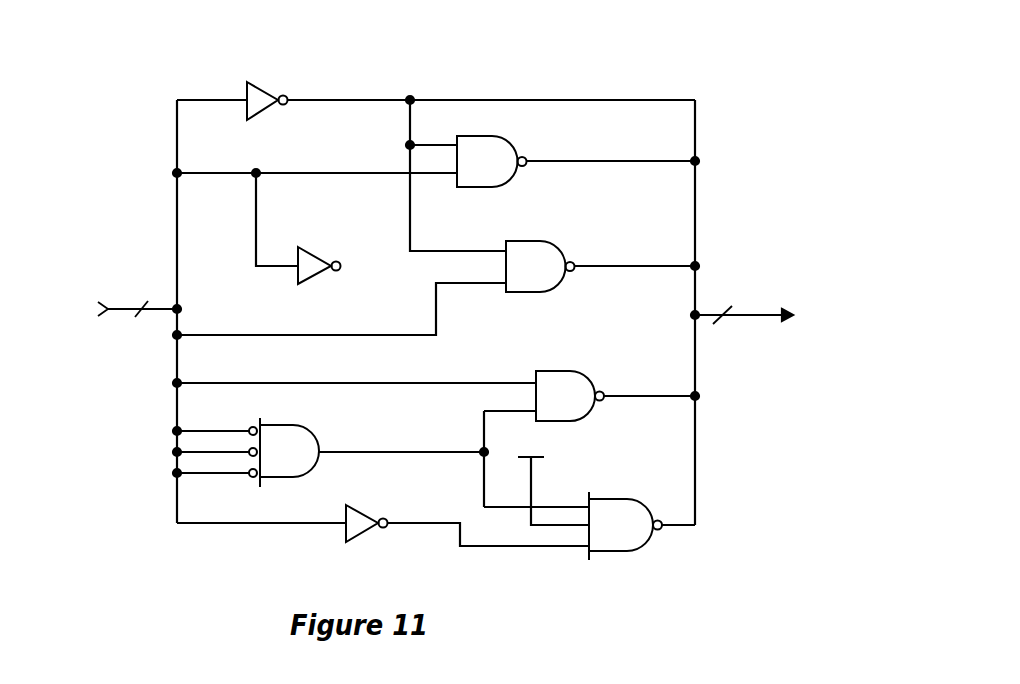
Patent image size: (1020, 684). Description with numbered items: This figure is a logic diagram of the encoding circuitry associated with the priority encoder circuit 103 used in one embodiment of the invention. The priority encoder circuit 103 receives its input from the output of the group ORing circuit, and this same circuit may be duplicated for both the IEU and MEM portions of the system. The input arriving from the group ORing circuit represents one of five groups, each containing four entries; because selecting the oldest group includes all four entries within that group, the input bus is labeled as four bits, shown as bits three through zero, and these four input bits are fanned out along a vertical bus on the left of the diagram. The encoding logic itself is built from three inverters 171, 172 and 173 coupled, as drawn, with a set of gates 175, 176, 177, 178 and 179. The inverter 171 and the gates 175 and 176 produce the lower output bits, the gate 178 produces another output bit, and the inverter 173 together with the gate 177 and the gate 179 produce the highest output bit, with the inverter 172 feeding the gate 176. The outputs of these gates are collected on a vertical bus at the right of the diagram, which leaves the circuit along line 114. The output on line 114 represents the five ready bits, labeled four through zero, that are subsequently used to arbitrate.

The priority encoder circuit 103 is at (489, 70).
The line 114 is at (750, 313).
The inverter 171 is at (266, 85).
The inverter 172 is at (314, 260).
The inverter 173 is at (355, 509).
The gate 175 is at (492, 161).
The gate 176 is at (540, 266).
The gate 177 is at (284, 452).
The gate 178 is at (570, 396).
The gate 179 is at (625, 526).